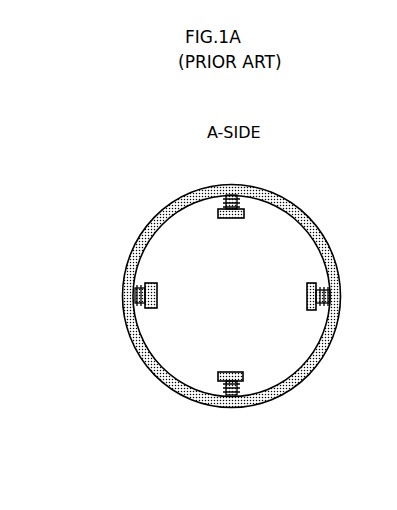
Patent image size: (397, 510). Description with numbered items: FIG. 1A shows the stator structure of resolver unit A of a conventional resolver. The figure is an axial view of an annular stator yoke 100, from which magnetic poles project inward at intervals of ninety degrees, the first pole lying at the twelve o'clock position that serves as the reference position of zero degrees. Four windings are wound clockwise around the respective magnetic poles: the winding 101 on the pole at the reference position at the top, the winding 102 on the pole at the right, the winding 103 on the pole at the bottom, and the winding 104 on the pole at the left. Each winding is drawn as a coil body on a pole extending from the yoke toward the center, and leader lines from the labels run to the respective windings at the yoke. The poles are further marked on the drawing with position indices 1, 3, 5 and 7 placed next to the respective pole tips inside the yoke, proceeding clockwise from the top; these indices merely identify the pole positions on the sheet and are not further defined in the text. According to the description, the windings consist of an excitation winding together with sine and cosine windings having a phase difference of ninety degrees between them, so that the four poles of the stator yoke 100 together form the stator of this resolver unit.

The stator yoke 100 is at (297, 210).
The winding 101 is at (199, 199).
The winding 102 is at (340, 277).
The winding 103 is at (195, 383).
The winding 104 is at (232, 285).
The pad position 1 is at (231, 227).
The pad position 3 is at (302, 296).
The pad position 5 is at (230, 365).
The pad position 7 is at (159, 296).